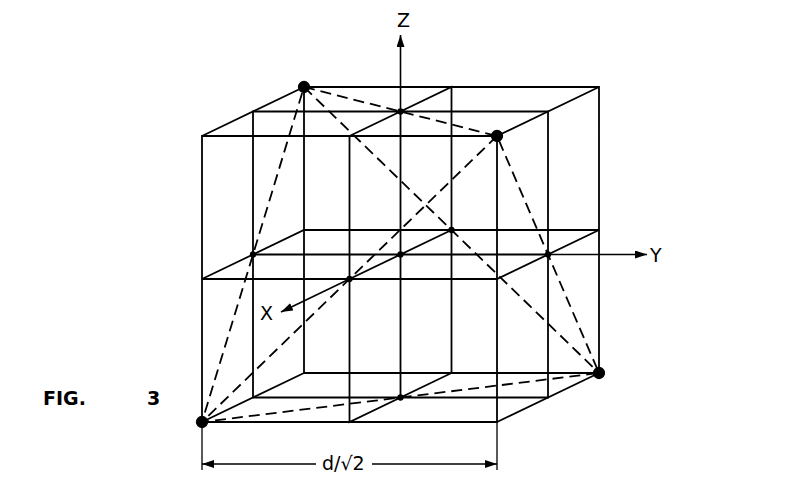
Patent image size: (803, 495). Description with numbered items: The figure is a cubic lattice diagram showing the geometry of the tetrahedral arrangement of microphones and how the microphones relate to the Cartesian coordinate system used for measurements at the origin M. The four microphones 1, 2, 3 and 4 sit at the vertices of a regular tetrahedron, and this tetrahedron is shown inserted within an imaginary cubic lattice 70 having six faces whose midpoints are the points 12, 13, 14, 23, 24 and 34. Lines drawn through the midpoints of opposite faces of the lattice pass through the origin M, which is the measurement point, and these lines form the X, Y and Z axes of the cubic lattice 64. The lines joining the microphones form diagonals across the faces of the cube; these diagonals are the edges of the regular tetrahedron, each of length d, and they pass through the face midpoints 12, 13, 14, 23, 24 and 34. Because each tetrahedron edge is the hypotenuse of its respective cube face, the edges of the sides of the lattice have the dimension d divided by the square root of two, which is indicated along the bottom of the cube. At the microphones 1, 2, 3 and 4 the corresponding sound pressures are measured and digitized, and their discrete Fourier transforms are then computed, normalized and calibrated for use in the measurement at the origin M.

The microphone 1 is at (304, 87).
The microphone 2 is at (498, 138).
The microphone 3 is at (599, 373).
The microphone 4 is at (202, 422).
The midpoint 12 is at (400, 112).
The midpoint 13 is at (452, 230).
The midpoint 14 is at (253, 254).
The midpoint 23 is at (548, 254).
The midpoint 24 is at (350, 279).
The midpoint 34 is at (400, 398).
The X, Y and Z axes of the cubic lattice 64 is at (551, 252).
The imaginary cubic lattice 70 is at (617, 118).
The origin M is at (400, 254).